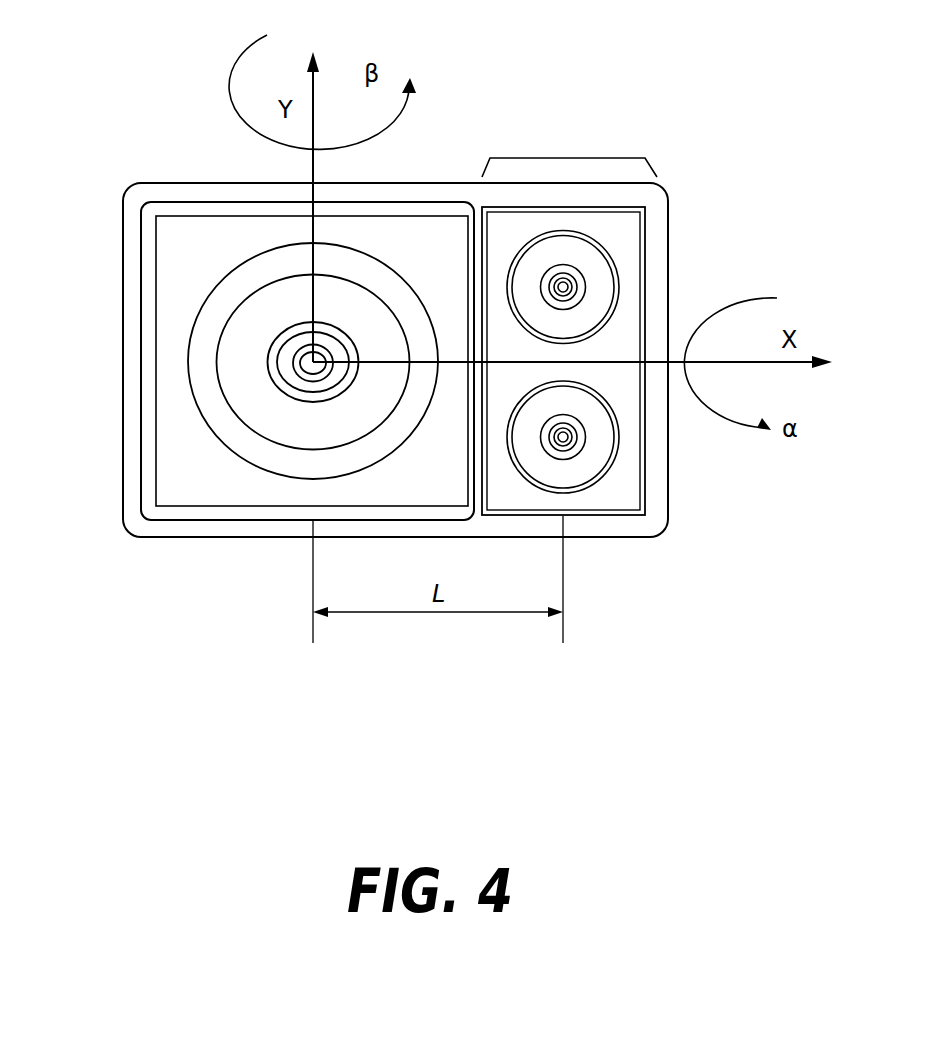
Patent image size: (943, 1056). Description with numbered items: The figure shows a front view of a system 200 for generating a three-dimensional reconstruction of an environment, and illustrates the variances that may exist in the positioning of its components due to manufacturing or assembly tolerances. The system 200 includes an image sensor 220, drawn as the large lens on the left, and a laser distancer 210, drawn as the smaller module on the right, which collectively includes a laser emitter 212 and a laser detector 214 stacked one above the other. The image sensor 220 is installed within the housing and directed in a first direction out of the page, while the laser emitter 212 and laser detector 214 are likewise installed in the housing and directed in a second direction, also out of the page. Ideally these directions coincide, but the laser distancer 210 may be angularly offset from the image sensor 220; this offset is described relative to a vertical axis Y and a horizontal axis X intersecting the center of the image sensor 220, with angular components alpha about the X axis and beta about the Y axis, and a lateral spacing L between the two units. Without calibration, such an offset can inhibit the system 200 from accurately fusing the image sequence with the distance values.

The system 200 is at (73, 48).
The laser distancer 210 is at (593, 158).
The laser emitter 212 is at (615, 248).
The laser detector 214 is at (615, 475).
The image sensor 220 is at (190, 350).